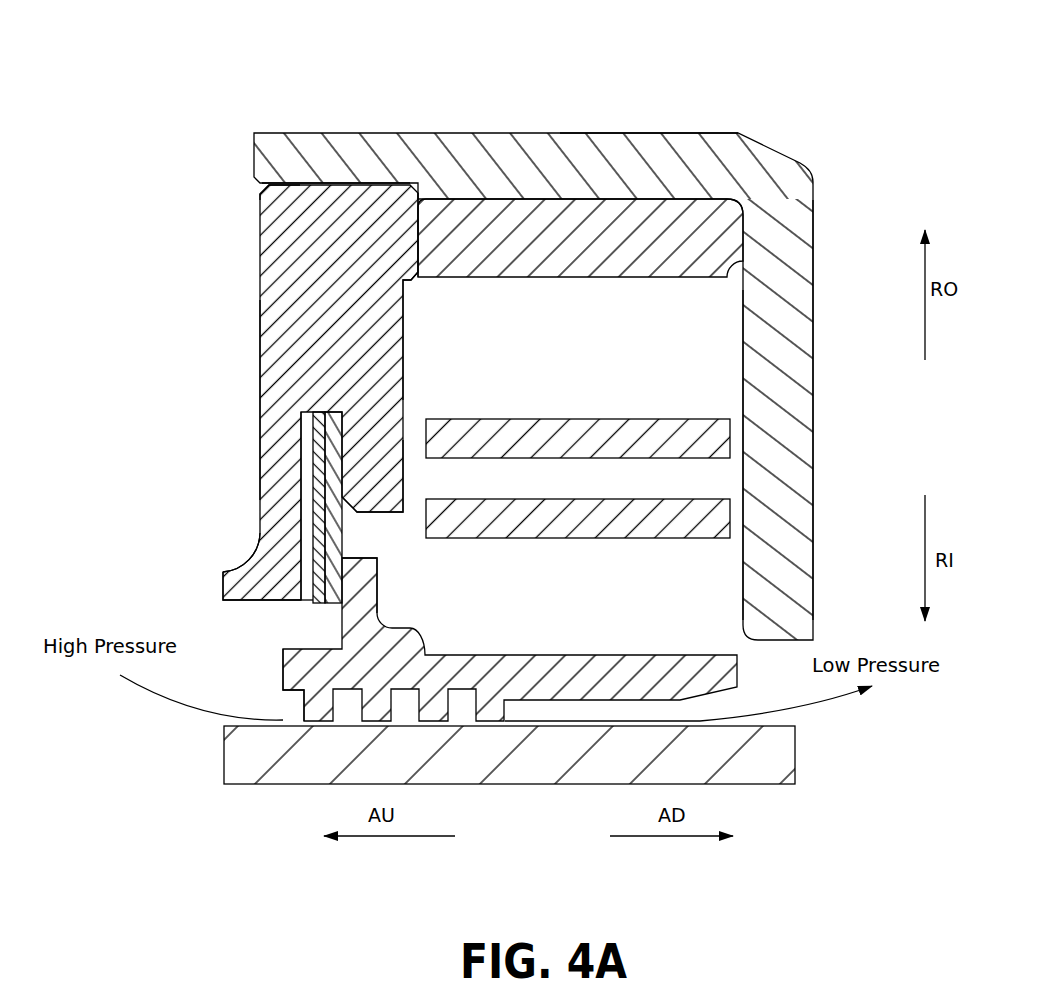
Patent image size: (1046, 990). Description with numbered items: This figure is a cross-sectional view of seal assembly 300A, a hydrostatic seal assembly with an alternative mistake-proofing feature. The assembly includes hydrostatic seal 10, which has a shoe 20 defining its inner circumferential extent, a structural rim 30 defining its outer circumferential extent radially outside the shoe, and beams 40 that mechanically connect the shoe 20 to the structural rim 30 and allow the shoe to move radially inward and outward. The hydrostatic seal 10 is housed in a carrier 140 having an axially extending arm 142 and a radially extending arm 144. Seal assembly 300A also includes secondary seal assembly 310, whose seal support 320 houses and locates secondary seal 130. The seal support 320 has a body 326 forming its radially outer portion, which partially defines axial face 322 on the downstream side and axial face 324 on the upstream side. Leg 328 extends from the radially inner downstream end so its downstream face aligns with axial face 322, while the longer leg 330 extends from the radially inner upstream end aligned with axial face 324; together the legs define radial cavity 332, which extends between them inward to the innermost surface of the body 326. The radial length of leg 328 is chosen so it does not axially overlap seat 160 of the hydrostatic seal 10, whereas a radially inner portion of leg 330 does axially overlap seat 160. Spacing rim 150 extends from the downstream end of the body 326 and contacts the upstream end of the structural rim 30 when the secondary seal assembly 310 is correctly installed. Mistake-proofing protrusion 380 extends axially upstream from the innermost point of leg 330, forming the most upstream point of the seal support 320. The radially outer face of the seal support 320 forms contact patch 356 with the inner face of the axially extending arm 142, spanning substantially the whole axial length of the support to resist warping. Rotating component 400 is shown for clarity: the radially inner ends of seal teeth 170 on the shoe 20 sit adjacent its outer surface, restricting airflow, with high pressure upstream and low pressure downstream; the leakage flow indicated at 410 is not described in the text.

The seal assembly 300A is at (348, 96).
The carrier 140 is at (560, 358).
The axially extending arm 142 is at (588, 133).
The radially extending arm 144 is at (815, 275).
The hydrostatic seal 10 is at (733, 405).
The structural rim 30 is at (580, 238).
The beams 40 is at (716, 515).
The secondary seal assembly 310 is at (214, 315).
The seal support 320 is at (344, 365).
The axial face 322 is at (405, 362).
The axial face 324 is at (258, 402).
The body 326 is at (260, 232).
The leg 328 is at (390, 430).
The leg 330 is at (270, 488).
The radial cavity 332 is at (307, 591).
The contact patch 356 is at (377, 180).
The spacing rim 150 is at (418, 223).
The mistake-proofing protrusion 380 is at (224, 592).
The secondary seal 130 is at (302, 515).
The shoe 20 is at (522, 654).
The seat 160 is at (375, 599).
The seal teeth 170 is at (278, 711).
The rotating component 400 is at (509, 755).
The leakage flow 410 is at (808, 712).